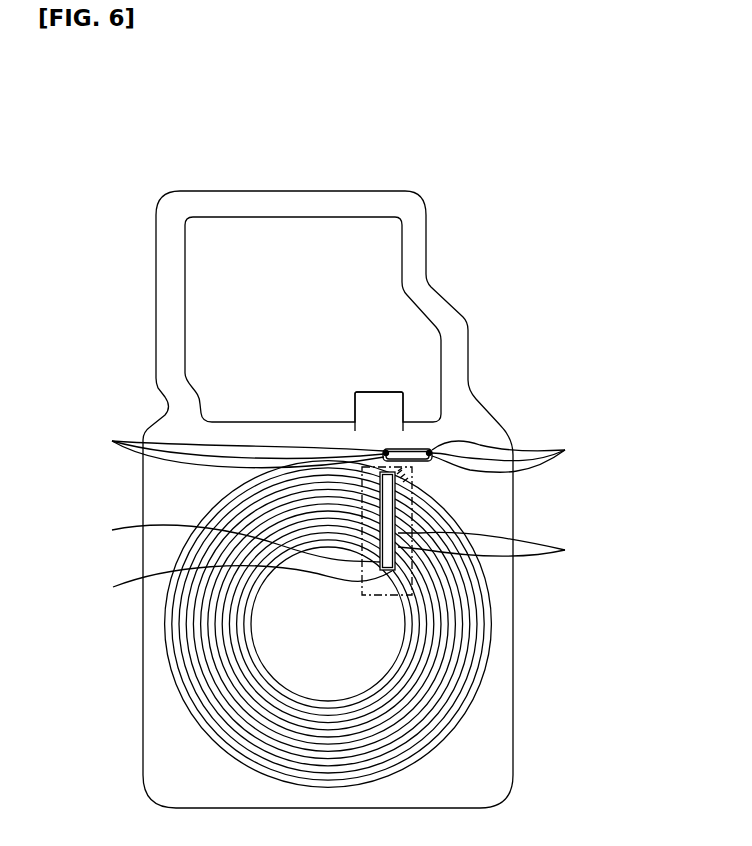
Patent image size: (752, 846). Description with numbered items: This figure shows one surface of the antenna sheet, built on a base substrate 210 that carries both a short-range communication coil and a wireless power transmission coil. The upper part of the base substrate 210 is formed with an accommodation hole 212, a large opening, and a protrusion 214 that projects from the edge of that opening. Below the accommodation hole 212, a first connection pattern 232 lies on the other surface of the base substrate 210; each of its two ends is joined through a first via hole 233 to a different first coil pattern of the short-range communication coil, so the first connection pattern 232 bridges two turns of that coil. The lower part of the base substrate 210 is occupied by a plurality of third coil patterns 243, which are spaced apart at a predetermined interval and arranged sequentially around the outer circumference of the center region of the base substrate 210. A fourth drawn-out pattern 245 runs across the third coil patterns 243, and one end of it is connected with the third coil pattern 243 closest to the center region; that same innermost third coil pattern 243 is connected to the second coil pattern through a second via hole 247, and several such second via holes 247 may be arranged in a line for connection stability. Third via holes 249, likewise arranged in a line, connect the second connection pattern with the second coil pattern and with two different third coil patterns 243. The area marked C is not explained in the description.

The base substrate 210 is at (468, 326).
The accommodation hole 212 is at (303, 243).
The protrusion 214 is at (378, 406).
The first connection pattern 232 is at (431, 463).
The first via hole 233 is at (337, 446).
The third coil pattern 243 is at (490, 628).
The fourth drawn-out pattern 245 is at (396, 487).
The second via hole 247 is at (230, 583).
The third via hole 249 is at (340, 515).
The connection region C is at (412, 591).